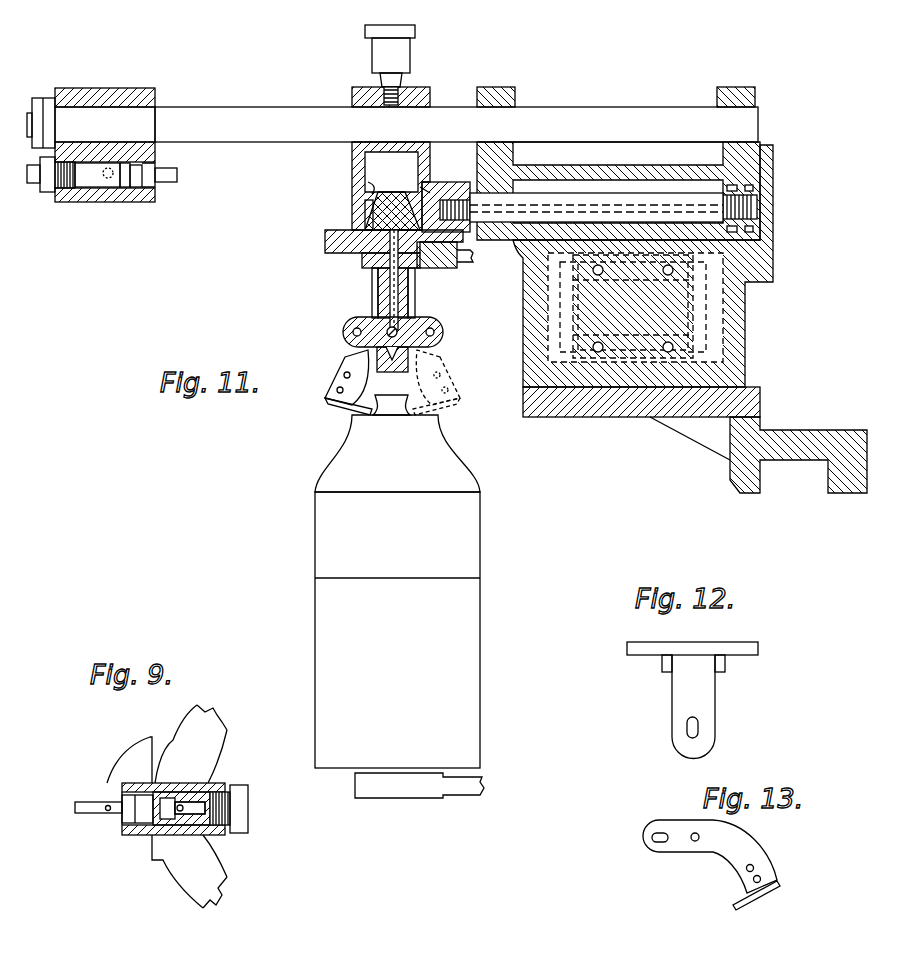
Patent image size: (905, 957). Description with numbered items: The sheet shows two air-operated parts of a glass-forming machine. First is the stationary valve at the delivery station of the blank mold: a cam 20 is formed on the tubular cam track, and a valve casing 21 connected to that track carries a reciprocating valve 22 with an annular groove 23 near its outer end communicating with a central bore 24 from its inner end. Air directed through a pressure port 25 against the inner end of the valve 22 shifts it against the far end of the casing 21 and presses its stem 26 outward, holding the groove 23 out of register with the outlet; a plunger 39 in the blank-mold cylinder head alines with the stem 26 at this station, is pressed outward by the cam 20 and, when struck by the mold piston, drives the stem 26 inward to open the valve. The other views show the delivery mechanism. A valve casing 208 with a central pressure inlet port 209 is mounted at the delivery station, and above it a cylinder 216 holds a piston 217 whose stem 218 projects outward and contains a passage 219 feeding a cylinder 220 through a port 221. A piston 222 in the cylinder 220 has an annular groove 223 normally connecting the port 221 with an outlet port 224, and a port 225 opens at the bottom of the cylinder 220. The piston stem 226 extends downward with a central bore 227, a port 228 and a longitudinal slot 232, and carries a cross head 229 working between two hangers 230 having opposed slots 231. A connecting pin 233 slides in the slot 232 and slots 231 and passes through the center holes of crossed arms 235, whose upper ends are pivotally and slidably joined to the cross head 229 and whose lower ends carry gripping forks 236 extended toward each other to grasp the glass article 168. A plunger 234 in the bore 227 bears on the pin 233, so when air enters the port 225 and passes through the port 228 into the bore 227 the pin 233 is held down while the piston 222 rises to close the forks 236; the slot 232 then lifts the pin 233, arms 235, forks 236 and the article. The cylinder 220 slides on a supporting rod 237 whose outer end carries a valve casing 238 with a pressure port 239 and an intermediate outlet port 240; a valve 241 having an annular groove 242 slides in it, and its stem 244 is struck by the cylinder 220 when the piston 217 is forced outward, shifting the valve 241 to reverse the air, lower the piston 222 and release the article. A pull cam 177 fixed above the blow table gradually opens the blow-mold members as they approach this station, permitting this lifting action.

In FIG. 11, the supporting rod 237 is at (262, 120).
In FIG. 11, the valve casing 238 is at (113, 196).
In FIG. 11, the pressure port 239 is at (34, 175).
In FIG. 11, the outlet port 240 is at (100, 180).
In FIG. 11, the valve 241 is at (140, 172).
In FIG. 11, the annular groove 242 is at (128, 178).
In FIG. 11, the stem 244 is at (178, 162).
In FIG. 11, the cylinder 220 is at (375, 162).
In FIG. 11, the port 221 is at (423, 202).
In FIG. 11, the piston 222 is at (372, 222).
In FIG. 11, the annular groove 223 is at (372, 190).
In FIG. 11, the outlet port 224 is at (370, 203).
In FIG. 11, the port 228 is at (432, 205).
In FIG. 11, the port 225 is at (432, 270).
In FIG. 11, the stem 226 is at (416, 300).
In FIG. 11, the central bore 227 is at (406, 285).
In FIG. 11, the cross head 229 is at (444, 336).
In FIG. 11, the hangers 230 is at (390, 276).
In FIG. 12, the hangers 230 is at (685, 695).
In FIG. 12, the slots 231 is at (700, 732).
In FIG. 11, the longitudinal slot 232 is at (404, 355).
In FIG. 11, the connecting pin 233 is at (392, 334).
In FIG. 11, the plunger 234 is at (396, 291).
In FIG. 11, the crossed arms 235 is at (356, 356).
In FIG. 13, the crossed arms 235 is at (710, 840).
In FIG. 11, the gripping fork 236 is at (325, 399).
In FIG. 13, the gripping fork 236 is at (753, 900).
In FIG. 11, the bottle 168 is at (352, 458).
In FIG. 11, the cylinder 216 is at (668, 165).
In FIG. 11, the piston 217 is at (758, 186).
In FIG. 11, the stem 218 is at (545, 193).
In FIG. 11, the passage 219 is at (607, 203).
In FIG. 11, the valve casing 208 is at (736, 318).
In FIG. 11, the central pressure inlet port 209 is at (632, 358).
In FIG. 11, the pull cam 177 is at (746, 484).
In FIG. 9, the cam 20 is at (128, 718).
In FIG. 9, the valve casing 21 is at (213, 783).
In FIG. 9, the valve 22 is at (155, 818).
In FIG. 9, the annular groove 23 is at (173, 798).
In FIG. 9, the central bore 24 is at (195, 807).
In FIG. 9, the pressure port 25 is at (237, 813).
In FIG. 9, the stem 26 is at (128, 805).
In FIG. 9, the plunger 39 is at (80, 807).